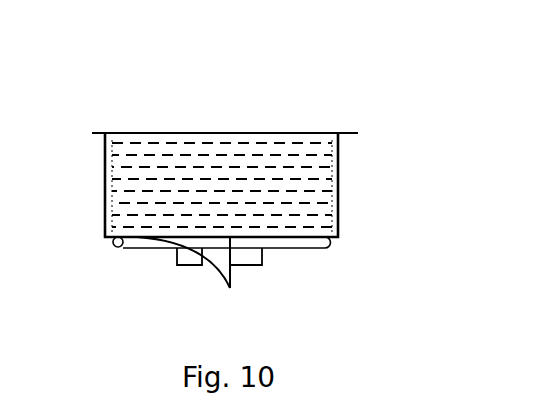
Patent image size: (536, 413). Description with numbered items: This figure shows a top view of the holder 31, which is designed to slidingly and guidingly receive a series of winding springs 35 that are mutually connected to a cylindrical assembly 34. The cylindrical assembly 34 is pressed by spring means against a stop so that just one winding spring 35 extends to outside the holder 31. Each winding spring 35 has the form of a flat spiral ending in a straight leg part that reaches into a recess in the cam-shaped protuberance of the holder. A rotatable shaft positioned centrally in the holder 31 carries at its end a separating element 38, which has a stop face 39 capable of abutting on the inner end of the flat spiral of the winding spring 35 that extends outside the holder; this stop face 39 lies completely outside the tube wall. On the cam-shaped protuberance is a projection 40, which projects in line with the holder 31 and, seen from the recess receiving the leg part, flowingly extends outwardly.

The holder 31 is at (99, 182).
The cylindrical assembly 34 is at (150, 131).
The winding spring 35 is at (142, 250).
The separating element 38 is at (250, 262).
The stop face 39 is at (190, 270).
The projection 40 is at (218, 257).